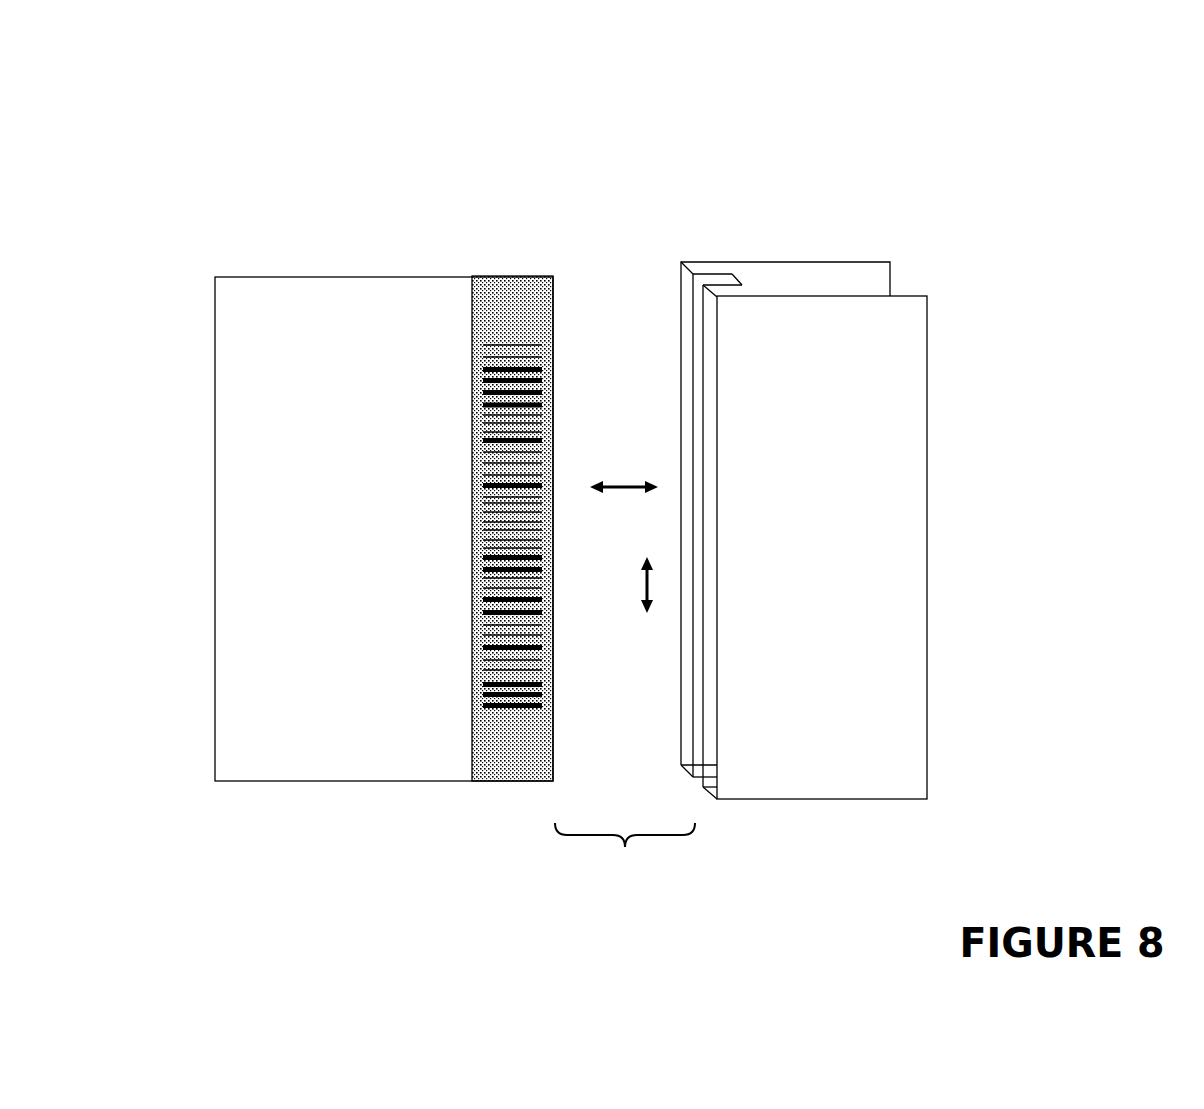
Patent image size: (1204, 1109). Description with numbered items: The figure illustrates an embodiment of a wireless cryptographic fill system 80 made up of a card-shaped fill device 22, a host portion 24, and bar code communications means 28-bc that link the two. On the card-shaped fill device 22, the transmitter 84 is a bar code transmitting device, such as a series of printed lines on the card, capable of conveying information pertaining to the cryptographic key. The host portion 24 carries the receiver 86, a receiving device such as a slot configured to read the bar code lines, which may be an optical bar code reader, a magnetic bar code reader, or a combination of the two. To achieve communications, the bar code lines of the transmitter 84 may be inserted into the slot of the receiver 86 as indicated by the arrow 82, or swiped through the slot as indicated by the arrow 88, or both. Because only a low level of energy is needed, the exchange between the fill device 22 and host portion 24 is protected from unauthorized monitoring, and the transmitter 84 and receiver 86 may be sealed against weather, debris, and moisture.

The wireless cryptographic fill system 80 is at (403, 80).
The card-shaped fill device 22 is at (306, 251).
The transmitter 84 is at (508, 261).
The receiver 86 is at (703, 271).
The host portion 24 is at (759, 241).
The arrow 82 is at (622, 484).
The arrow 88 is at (645, 585).
The bar code communications means 28-bc is at (624, 867).